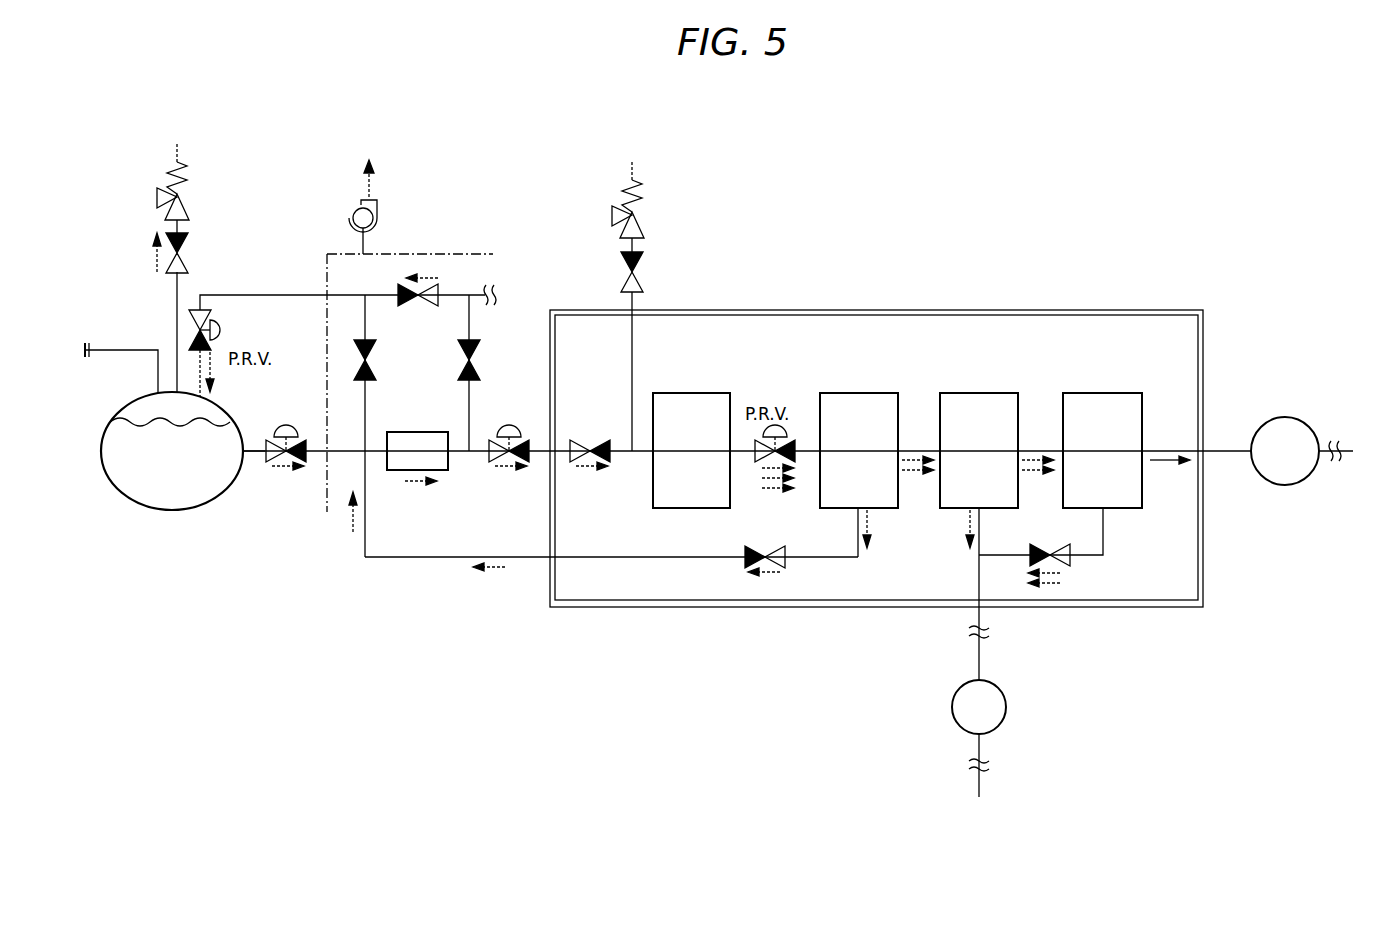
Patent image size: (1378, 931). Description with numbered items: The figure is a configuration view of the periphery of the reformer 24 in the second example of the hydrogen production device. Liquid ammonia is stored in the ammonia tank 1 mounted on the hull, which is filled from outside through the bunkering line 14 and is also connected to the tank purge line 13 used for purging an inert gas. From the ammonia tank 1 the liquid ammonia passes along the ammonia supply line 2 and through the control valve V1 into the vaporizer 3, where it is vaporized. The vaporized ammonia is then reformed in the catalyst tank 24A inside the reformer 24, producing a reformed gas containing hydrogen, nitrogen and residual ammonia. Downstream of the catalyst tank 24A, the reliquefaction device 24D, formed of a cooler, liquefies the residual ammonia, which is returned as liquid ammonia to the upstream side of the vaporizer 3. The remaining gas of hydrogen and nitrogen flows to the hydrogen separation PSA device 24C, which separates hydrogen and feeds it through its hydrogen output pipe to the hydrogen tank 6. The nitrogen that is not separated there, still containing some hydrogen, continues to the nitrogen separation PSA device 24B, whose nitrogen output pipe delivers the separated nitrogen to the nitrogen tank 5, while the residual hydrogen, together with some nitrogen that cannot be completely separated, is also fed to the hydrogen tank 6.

The ammonia tank 1 is at (216, 500).
The ammonia supply line 2 is at (250, 455).
The vaporizer 3 is at (412, 432).
The nitrogen tank 5 is at (1285, 417).
The hydrogen tank 6 is at (1006, 705).
The tank purge line 13 is at (258, 295).
The bunkering line 14 is at (108, 350).
The reformer 24 is at (1204, 583).
The catalyst tank 24A is at (688, 393).
The nitrogen separation PSA device 24B is at (1098, 393).
The hydrogen separation PSA device 24C is at (972, 393).
The reliquefaction device 24D is at (855, 393).
The control valve V1 is at (296, 436).